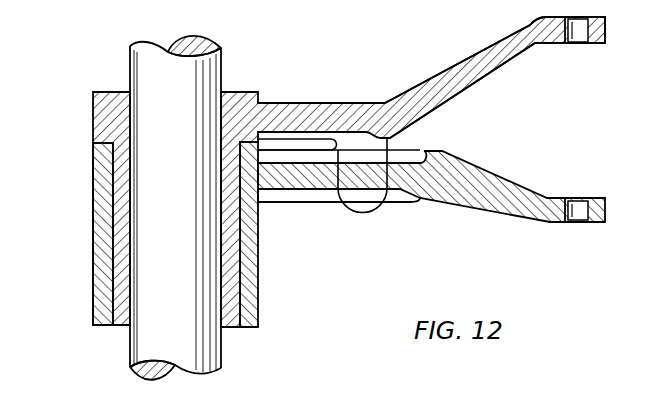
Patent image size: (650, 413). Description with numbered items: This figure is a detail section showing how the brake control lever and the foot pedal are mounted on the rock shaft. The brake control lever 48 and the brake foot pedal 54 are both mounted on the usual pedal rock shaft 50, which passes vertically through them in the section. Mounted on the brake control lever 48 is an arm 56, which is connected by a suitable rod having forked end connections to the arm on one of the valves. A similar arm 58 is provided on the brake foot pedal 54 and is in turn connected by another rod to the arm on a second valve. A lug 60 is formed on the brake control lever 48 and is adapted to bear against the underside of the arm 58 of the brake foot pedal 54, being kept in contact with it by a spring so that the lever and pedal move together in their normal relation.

The brake control lever 48 is at (320, 118).
The pedal rock shaft 50 is at (198, 70).
The brake foot pedal 54 is at (102, 278).
The arm 56 is at (420, 100).
The arm 58 is at (523, 210).
The lug 60 is at (390, 142).